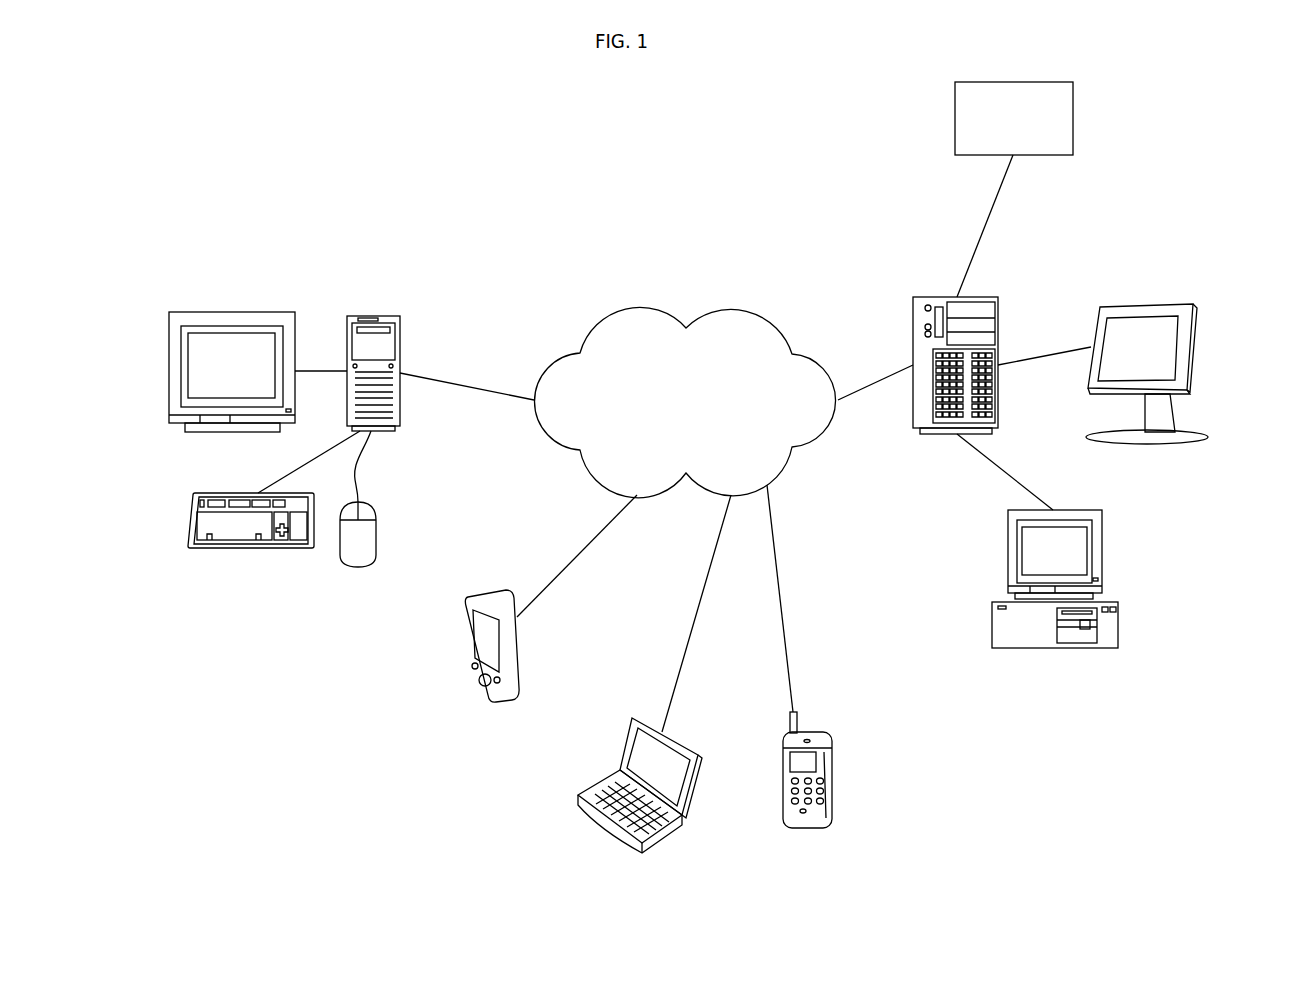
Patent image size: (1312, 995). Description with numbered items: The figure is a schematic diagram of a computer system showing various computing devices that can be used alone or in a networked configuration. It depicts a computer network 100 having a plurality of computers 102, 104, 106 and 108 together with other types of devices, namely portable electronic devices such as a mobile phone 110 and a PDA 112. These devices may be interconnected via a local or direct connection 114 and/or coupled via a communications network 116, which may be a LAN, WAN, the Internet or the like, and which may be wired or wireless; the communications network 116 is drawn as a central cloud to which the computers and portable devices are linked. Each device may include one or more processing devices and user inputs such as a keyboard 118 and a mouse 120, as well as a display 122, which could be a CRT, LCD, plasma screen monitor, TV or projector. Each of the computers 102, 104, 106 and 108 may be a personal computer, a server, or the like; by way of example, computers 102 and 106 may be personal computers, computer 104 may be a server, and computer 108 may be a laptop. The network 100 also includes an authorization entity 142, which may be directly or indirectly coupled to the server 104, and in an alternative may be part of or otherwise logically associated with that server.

The computer network 100 is at (697, 110).
The computer 102 is at (371, 316).
The computer 104 is at (998, 300).
The computer 106 is at (992, 610).
The computer 108 is at (578, 797).
The mobile phone 110 is at (834, 770).
The PDA 112 is at (468, 673).
The local or direct connection 114 is at (998, 469).
The communications network 116 is at (730, 307).
The keyboard 118 is at (195, 518).
The mouse 120 is at (376, 526).
The display 122 is at (169, 366).
The authorization entity 142 is at (1073, 118).